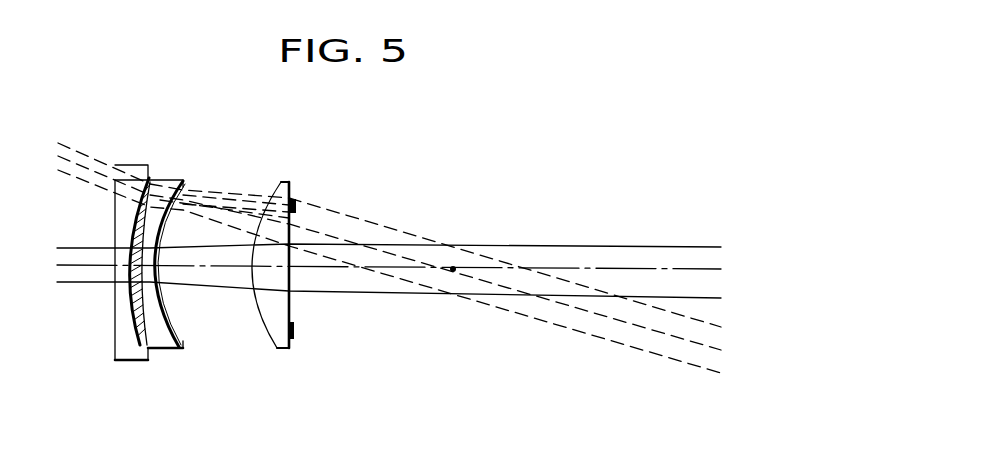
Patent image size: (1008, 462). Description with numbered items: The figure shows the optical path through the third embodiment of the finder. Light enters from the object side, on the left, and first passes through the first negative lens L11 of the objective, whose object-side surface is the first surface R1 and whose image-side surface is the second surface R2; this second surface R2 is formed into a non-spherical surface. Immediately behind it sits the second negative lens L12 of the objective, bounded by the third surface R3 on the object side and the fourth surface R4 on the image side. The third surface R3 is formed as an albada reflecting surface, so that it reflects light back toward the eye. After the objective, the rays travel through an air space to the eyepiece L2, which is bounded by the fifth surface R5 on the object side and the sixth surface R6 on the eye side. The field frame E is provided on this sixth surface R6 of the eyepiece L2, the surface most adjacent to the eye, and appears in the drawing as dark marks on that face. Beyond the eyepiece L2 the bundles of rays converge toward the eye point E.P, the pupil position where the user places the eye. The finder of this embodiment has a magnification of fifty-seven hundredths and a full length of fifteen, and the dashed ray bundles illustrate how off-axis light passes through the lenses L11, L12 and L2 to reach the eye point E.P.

The first negative lens L11 is at (130, 165).
The second negative lens L12 is at (172, 180).
The eyepiece L2 is at (283, 182).
The field frame E is at (295, 208).
The first surface R1 is at (115, 340).
The second surface R2 is at (145, 343).
The third surface R3 is at (150, 326).
The fourth surface R4 is at (185, 338).
The fifth surface R5 is at (271, 333).
The sixth surface R6 is at (294, 343).
The eye point E.P is at (453, 272).